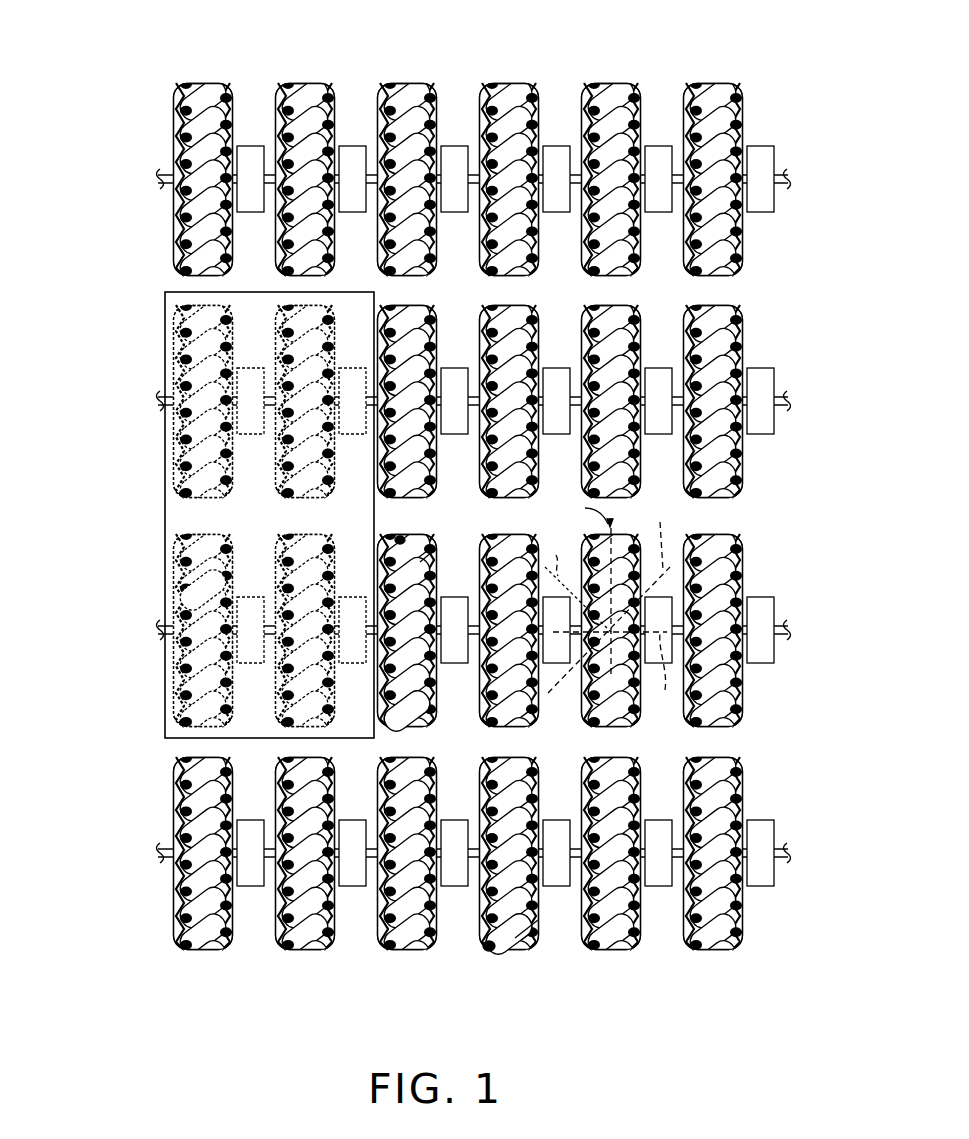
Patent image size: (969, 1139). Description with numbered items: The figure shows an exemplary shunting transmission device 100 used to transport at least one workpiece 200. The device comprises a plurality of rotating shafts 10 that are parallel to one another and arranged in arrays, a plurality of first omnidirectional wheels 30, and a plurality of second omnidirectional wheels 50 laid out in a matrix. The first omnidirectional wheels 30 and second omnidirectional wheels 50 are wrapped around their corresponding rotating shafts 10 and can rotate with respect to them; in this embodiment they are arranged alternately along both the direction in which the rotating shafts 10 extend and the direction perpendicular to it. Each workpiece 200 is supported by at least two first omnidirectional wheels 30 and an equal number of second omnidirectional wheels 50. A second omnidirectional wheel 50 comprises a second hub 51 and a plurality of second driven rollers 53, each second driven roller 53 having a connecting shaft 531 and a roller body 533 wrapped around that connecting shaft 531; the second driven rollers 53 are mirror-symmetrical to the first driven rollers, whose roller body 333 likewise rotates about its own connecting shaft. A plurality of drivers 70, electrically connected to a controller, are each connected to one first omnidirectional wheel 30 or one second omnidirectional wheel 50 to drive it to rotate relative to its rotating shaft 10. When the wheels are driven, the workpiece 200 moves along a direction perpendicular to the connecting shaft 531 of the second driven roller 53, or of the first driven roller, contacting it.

The shunting transmission device 100 is at (495, 21).
The rotating shaft 10 is at (780, 640).
The first omnidirectional wheel 30 is at (528, 730).
The second omnidirectional wheel 50 is at (185, 527).
The second hub 51 is at (545, 925).
The second driven roller 53 is at (505, 957).
The driver 70 is at (762, 600).
The workpiece 200 is at (165, 726).
The roller body 333 is at (165, 588).
The connecting shaft 531 is at (425, 557).
The roller body 533 is at (405, 533).